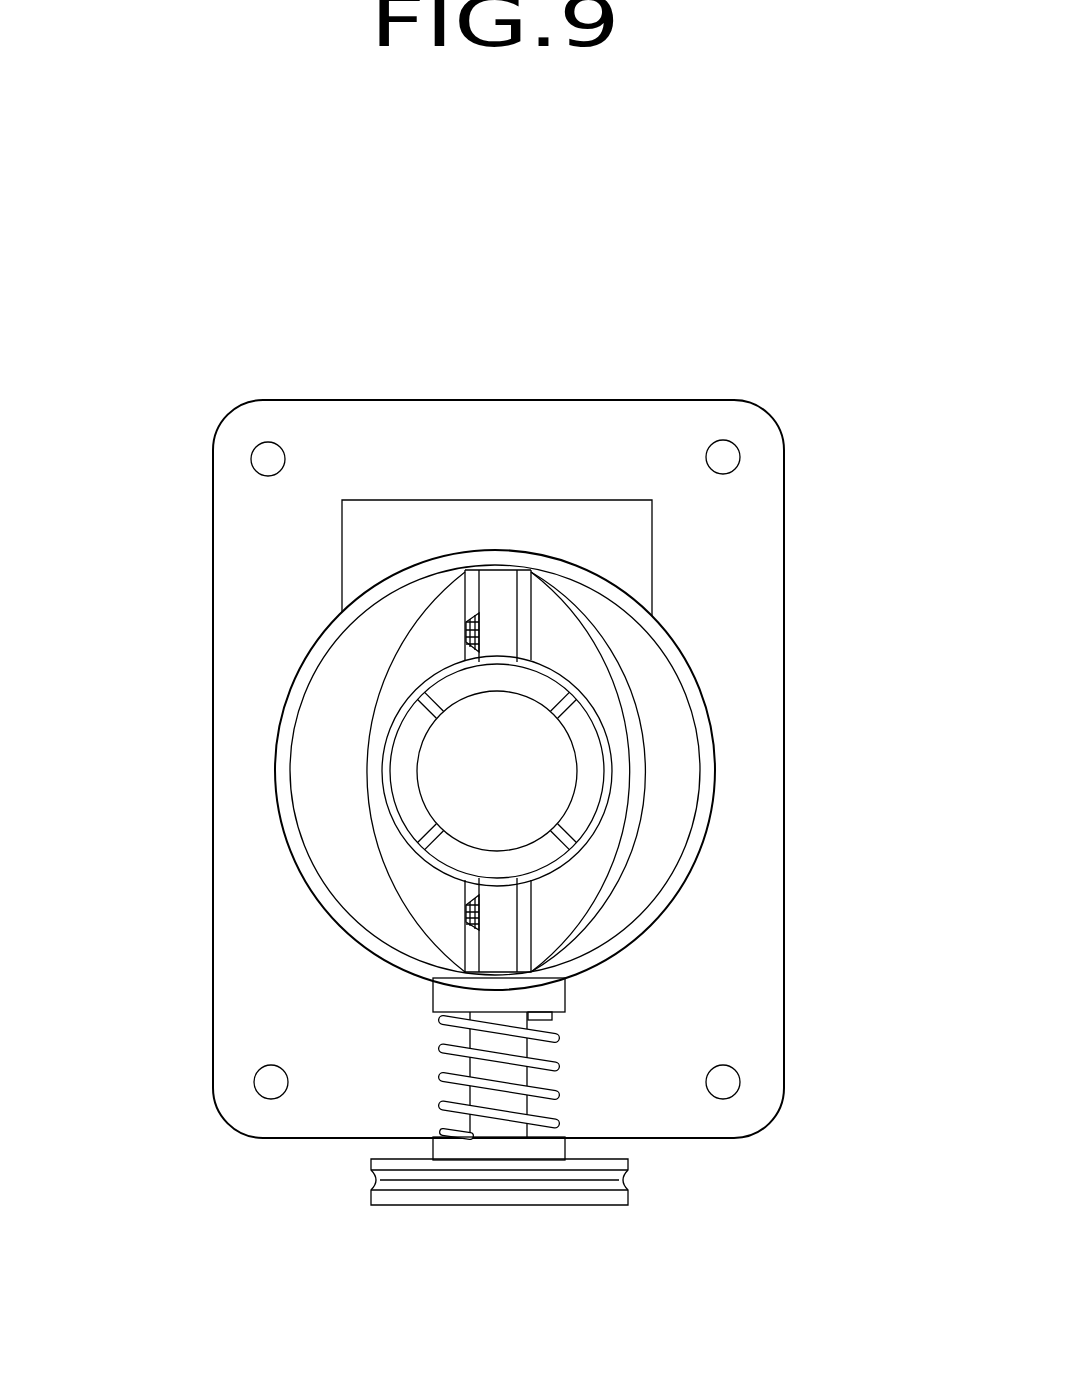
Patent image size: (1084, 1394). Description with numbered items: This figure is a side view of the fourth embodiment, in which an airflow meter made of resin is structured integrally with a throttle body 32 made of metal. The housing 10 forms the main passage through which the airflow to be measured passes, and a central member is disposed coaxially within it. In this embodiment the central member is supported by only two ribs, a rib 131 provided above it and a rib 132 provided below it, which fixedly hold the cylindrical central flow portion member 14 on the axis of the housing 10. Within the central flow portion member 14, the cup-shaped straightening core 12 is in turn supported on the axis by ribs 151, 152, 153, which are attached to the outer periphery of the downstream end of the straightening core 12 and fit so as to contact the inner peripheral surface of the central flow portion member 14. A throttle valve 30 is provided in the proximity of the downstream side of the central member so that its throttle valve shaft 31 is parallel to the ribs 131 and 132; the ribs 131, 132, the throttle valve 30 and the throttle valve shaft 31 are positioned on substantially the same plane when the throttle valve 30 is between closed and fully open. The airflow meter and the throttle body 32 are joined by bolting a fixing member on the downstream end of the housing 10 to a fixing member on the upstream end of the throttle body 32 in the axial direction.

The housing 10 is at (713, 720).
The straightening core 12 is at (528, 785).
The central flow portion member 14 is at (377, 780).
The throttle valve 30 is at (563, 642).
The throttle valve shaft 31 is at (465, 608).
The throttle body 32 is at (743, 507).
The rib 131 is at (492, 587).
The rib 132 is at (500, 932).
The rib 151 is at (563, 703).
The rib 152 is at (553, 832).
The rib 153 is at (432, 834).